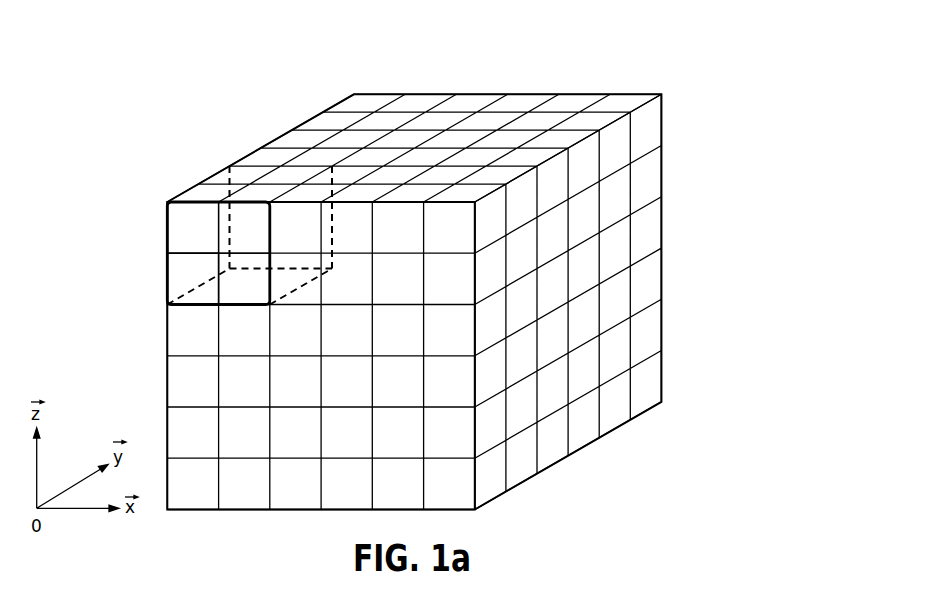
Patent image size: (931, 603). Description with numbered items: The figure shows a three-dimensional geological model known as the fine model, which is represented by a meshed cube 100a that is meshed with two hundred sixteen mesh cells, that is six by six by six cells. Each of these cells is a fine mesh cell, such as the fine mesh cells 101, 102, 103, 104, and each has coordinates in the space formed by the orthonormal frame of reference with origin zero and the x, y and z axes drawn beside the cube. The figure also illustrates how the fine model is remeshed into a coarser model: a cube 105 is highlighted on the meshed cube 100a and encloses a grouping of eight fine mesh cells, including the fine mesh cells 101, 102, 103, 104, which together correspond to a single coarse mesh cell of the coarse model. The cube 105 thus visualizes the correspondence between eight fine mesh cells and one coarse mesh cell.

The meshed cube 100a is at (582, 85).
The cube 105 is at (212, 163).
The fine mesh cell 103 is at (233, 213).
The fine mesh cell 101 is at (180, 220).
The fine mesh cell 102 is at (180, 272).
The fine mesh cell 104 is at (235, 292).